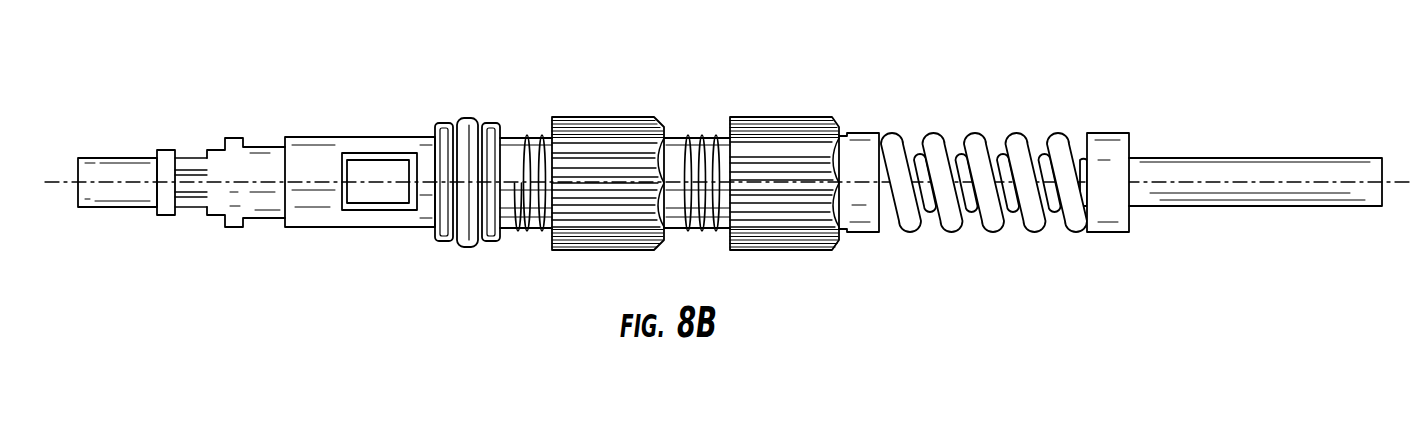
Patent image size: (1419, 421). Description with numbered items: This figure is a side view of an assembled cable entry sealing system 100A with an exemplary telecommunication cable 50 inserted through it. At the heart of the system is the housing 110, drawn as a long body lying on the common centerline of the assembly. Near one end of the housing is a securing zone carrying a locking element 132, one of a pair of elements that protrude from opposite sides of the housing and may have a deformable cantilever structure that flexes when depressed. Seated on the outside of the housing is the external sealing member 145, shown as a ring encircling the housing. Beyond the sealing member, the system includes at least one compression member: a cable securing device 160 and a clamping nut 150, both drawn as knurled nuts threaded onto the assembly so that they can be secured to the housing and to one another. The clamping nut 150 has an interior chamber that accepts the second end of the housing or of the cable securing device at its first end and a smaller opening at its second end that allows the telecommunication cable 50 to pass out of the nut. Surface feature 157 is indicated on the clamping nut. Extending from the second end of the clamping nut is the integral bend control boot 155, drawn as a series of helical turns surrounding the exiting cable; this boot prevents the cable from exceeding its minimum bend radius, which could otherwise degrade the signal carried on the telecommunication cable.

The cable entry sealing system 100A is at (912, 73).
The telecommunication cable 50 is at (125, 158).
The housing 110 is at (350, 136).
The locking element 132 is at (377, 194).
The external sealing member 145 is at (470, 118).
The cable securing device 160 is at (596, 118).
The clamping nut 150 is at (780, 116).
The knurled surface 157 is at (783, 215).
The bend control boot 155 is at (1033, 232).